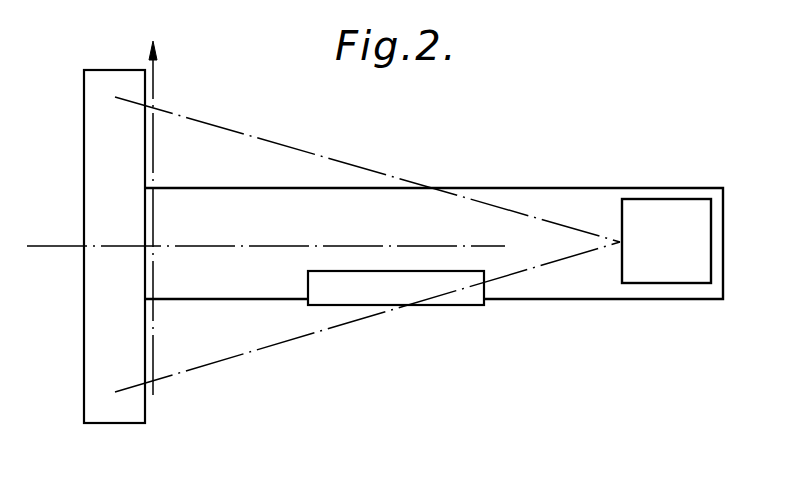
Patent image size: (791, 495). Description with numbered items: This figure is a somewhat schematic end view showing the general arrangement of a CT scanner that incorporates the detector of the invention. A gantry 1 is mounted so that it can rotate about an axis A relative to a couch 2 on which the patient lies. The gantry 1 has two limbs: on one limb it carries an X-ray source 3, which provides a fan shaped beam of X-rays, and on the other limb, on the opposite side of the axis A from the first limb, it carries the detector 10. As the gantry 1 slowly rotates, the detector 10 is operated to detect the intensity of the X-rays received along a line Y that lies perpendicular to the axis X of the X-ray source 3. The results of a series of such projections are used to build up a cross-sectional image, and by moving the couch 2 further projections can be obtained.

The gantry 1 is at (597, 188).
The couch 2 is at (402, 297).
The X-ray source 3 is at (673, 250).
The detector 10 is at (84, 70).
The axis of rotation A is at (399, 246).
The axis of the X-ray source X is at (58, 246).
The detection line Y is at (156, 66).